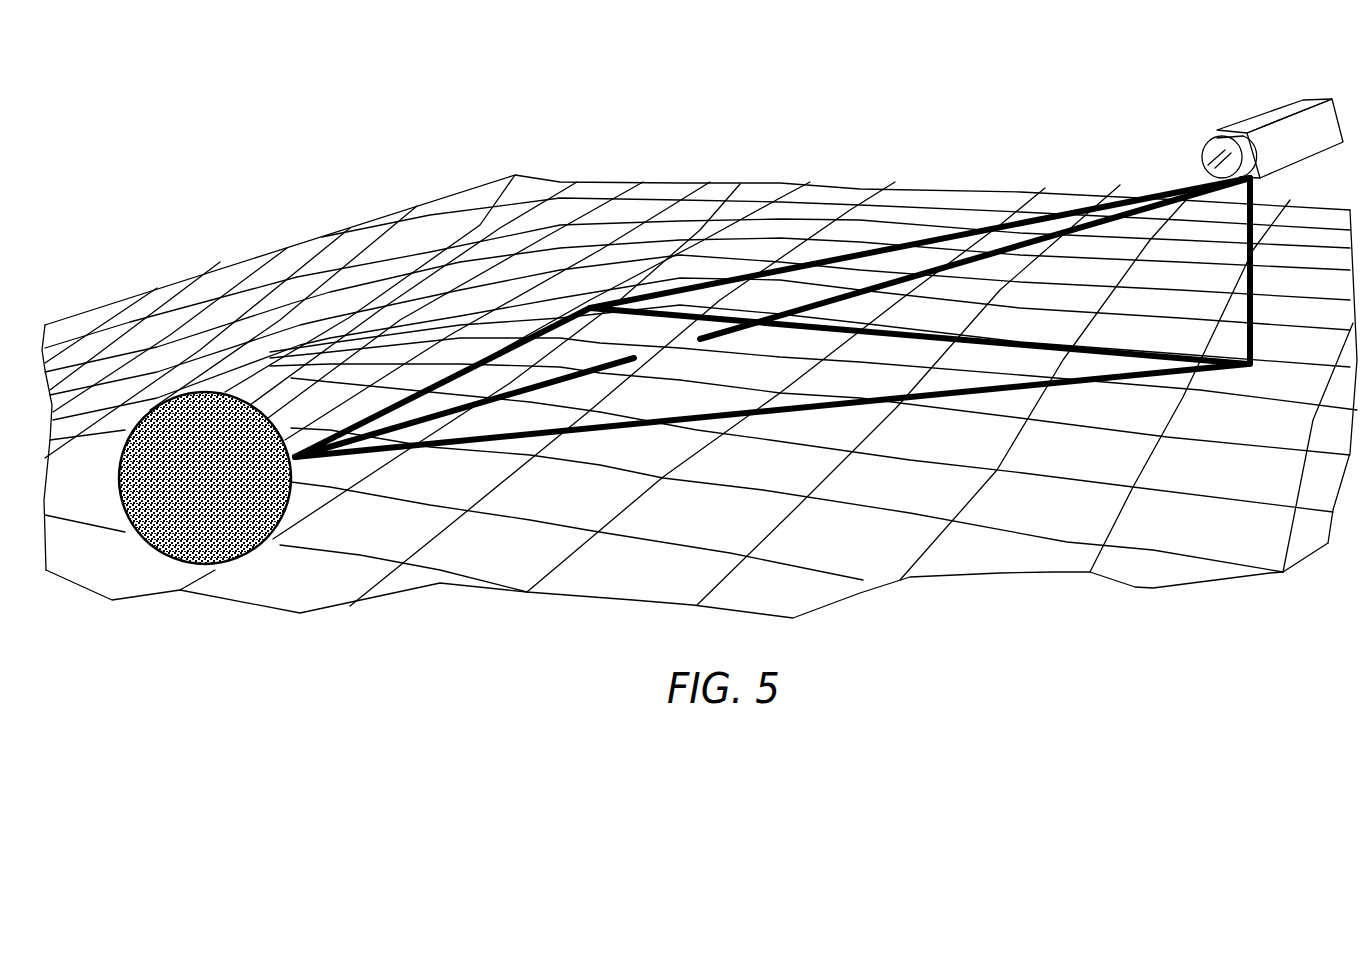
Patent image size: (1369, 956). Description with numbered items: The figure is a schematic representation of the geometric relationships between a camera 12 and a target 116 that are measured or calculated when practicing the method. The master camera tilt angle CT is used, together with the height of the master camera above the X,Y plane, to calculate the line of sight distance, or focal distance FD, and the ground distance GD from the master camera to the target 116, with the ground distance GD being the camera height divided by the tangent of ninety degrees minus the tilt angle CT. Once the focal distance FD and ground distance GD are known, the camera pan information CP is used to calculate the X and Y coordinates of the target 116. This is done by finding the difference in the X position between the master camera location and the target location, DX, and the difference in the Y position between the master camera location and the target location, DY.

The camera 12 is at (1253, 122).
The target 116 is at (288, 506).
The difference in the X position DX is at (442, 382).
The difference in the Y position DY is at (919, 326).
The focal distance FD is at (772, 317).
The ground distance GD is at (771, 416).
The camera pan information CP is at (920, 232).
The master camera tilt angle CT is at (1207, 271).